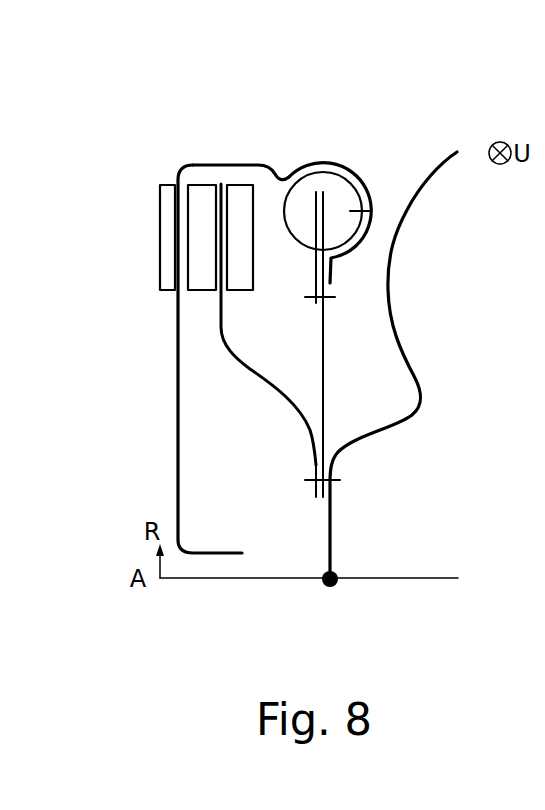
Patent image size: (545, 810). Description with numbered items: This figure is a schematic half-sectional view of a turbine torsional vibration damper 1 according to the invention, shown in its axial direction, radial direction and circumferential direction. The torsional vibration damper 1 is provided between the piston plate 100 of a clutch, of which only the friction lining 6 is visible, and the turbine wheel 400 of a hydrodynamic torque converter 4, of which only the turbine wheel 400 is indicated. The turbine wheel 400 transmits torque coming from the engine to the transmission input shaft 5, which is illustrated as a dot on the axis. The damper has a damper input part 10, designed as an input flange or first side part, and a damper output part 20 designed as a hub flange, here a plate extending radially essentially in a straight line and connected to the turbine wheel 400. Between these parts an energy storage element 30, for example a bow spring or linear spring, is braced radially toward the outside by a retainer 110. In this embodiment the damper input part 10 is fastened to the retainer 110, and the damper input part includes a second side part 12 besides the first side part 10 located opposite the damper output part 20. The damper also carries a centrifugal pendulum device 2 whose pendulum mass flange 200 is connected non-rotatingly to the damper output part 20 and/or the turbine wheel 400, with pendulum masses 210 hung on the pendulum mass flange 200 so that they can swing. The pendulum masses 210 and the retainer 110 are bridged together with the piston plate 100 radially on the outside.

The torsional vibration damper 1 is at (229, 94).
The centrifugal pendulum device 2 is at (184, 300).
The hydrodynamic torque converter 4 is at (420, 301).
The transmission input shaft 5 is at (191, 579).
The friction lining 6 is at (168, 212).
The damper input part 10 is at (366, 241).
The second side part 12 is at (310, 287).
The damper output part 20 is at (325, 320).
The energy storage element 30 is at (352, 172).
The piston plate 100 is at (177, 461).
The retainer 110 is at (337, 173).
The pendulum mass flange 200 is at (222, 195).
The pendulum masses 210 is at (247, 208).
The turbine wheel 400 is at (403, 218).